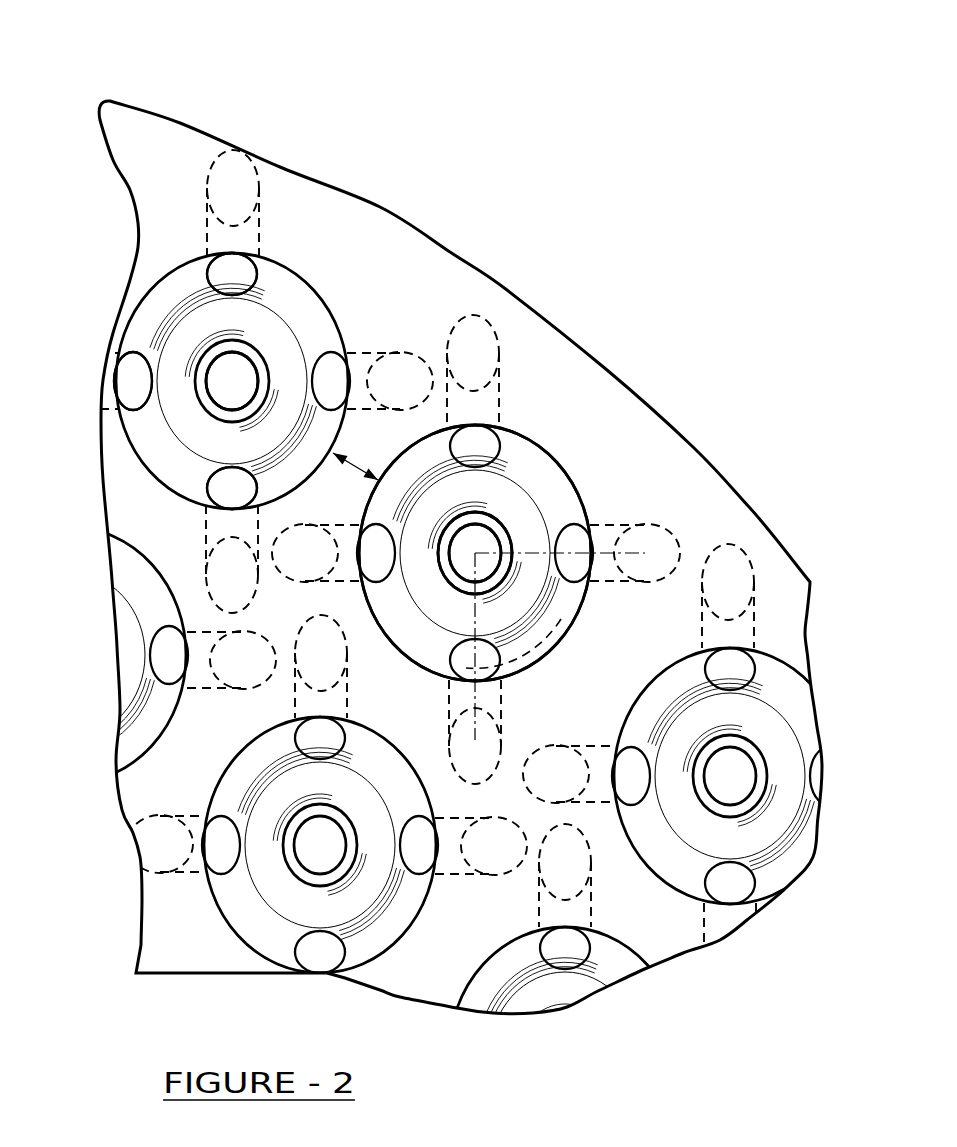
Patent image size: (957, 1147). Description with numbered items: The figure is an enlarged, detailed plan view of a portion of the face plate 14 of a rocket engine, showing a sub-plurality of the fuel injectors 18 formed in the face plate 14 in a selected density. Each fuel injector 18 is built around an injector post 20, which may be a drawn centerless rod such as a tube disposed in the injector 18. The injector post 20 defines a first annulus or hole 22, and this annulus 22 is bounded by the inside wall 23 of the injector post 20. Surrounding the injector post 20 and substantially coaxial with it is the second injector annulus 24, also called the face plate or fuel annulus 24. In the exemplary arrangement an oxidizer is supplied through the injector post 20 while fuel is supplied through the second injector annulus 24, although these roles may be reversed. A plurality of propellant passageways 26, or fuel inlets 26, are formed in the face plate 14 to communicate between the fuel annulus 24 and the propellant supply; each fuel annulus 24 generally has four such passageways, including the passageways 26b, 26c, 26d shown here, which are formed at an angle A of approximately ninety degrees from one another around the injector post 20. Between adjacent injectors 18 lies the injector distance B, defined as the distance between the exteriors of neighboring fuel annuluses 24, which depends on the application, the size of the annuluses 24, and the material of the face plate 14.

The face plate 14 is at (323, 217).
The fuel injector 18 is at (187, 247).
The injector post 20 is at (205, 420).
The first annulus 22 is at (487, 522).
The inside wall 23 is at (450, 538).
The second injector annulus 24 is at (580, 495).
The propellant passageways 26 is at (330, 373).
The passageway 26b is at (225, 278).
The passageway 26c is at (128, 387).
The passageway 26d is at (220, 486).
The angle A is at (535, 647).
The injector distance B is at (355, 466).